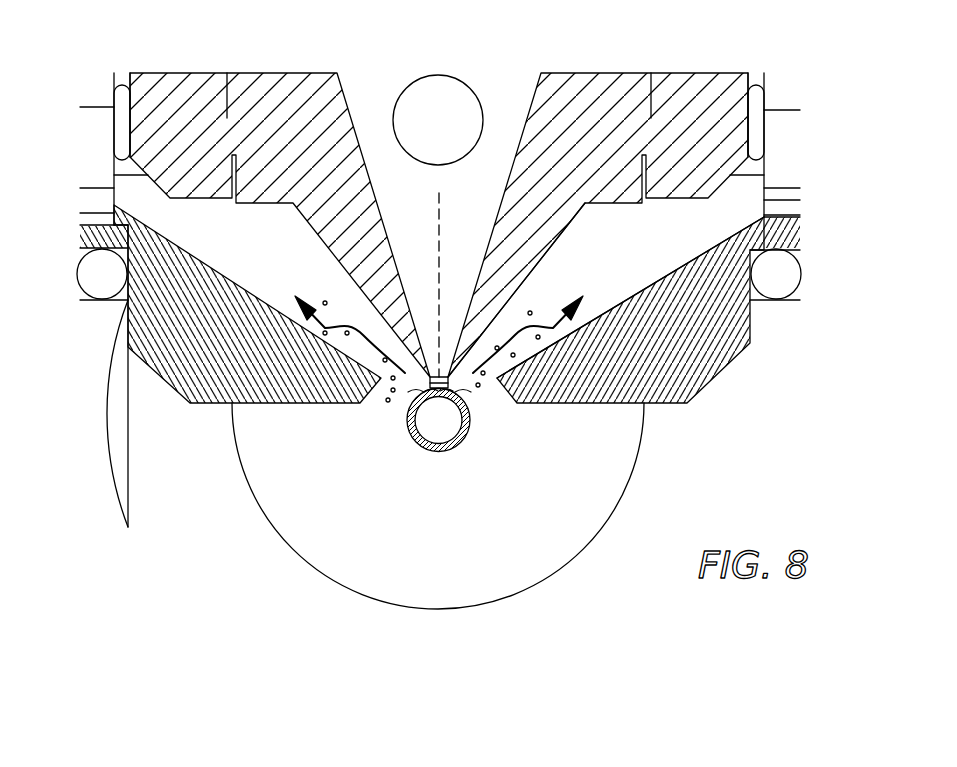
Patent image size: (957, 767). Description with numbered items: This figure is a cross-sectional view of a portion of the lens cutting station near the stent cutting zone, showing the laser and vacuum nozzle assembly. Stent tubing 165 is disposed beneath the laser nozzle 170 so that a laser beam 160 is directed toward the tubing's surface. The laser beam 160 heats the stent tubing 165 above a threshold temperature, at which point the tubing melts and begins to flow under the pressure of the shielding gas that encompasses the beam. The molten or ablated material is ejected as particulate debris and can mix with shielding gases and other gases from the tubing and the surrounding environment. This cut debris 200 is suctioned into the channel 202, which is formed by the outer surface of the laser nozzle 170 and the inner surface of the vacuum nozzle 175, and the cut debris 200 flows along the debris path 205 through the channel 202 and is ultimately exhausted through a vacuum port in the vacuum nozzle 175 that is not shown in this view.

The laser beam 160 is at (440, 240).
The stent tubing 165 is at (420, 447).
The laser nozzle 170 is at (568, 223).
The vacuum nozzle 175 is at (713, 378).
The cut debris 200 is at (472, 372).
The channel 202 is at (617, 268).
The debris path 205 is at (567, 333).